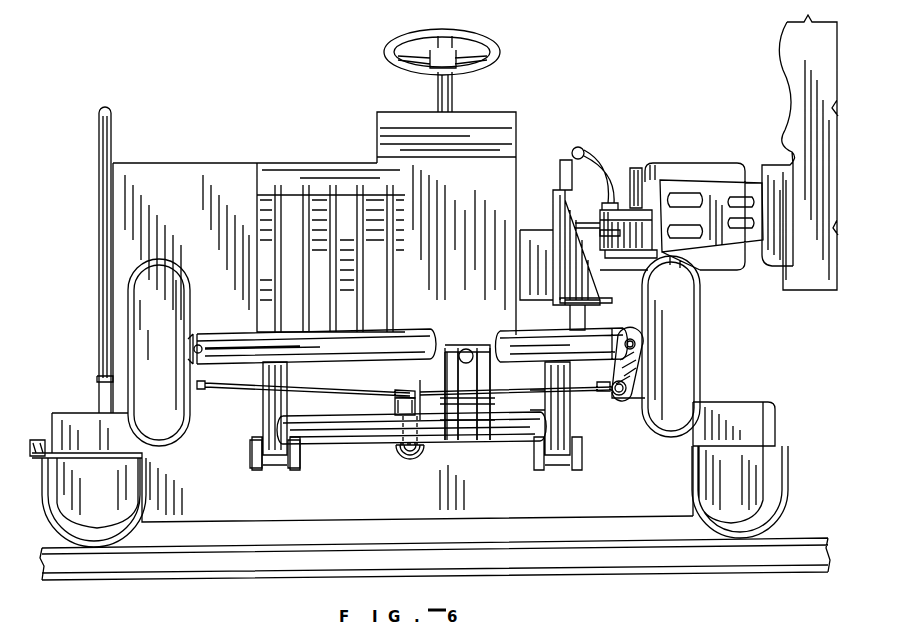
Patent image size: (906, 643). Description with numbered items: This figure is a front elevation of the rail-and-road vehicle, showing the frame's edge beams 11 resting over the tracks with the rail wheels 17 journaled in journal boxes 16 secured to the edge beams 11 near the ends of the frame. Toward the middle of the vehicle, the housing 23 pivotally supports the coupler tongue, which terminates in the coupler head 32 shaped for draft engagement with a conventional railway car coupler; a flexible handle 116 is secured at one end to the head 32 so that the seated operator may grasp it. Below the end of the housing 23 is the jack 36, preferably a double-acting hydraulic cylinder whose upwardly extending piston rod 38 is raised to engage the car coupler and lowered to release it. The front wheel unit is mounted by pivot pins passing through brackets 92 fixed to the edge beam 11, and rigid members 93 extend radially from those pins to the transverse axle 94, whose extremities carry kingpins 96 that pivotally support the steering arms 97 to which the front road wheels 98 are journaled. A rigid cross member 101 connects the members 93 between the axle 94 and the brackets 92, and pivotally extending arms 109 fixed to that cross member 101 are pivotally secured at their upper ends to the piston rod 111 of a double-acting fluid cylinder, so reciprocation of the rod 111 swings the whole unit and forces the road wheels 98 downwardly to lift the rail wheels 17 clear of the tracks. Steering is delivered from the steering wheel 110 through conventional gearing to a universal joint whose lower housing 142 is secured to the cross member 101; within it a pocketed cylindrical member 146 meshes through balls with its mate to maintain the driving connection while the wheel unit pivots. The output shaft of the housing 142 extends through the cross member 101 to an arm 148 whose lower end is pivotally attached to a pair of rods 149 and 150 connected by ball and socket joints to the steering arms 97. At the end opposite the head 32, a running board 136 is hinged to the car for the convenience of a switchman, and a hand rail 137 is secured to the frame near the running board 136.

The edge beam 11 is at (733, 410).
The journal box 16 is at (752, 466).
The rail wheel 17 is at (788, 478).
The housing 23 is at (566, 190).
The coupler head 32 is at (640, 168).
The jack 36 is at (612, 395).
The piston rod 38 is at (584, 308).
The bracket 92 is at (252, 452).
The rigid member 93 is at (262, 412).
The transverse axle 94 is at (410, 330).
The kingpin 96 is at (636, 330).
The arm 97 is at (640, 400).
The front road wheel 98 is at (683, 308).
The cross member 101 is at (362, 440).
The pivotally extending arm 109 is at (480, 405).
The steering wheel 110 is at (495, 40).
The piston rod 111 is at (490, 356).
The flexible handle 116 is at (598, 148).
The running board 136 is at (36, 440).
The hand rail 137 is at (105, 124).
The housing 142 is at (430, 450).
The cylindrical member 146 is at (402, 478).
The arm 148 is at (410, 400).
The rod 149 is at (527, 396).
The rod 150 is at (355, 386).